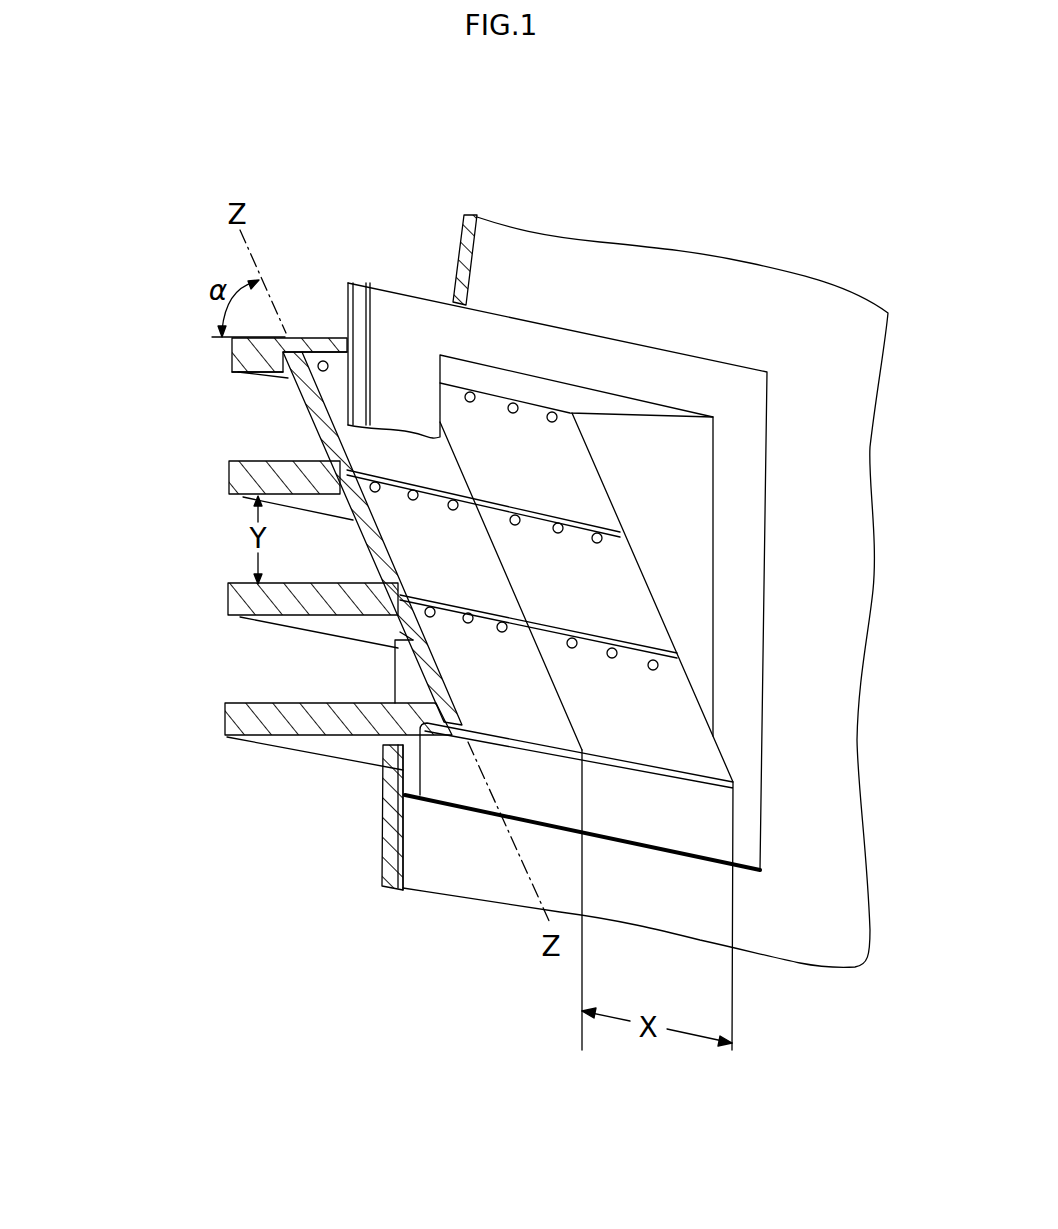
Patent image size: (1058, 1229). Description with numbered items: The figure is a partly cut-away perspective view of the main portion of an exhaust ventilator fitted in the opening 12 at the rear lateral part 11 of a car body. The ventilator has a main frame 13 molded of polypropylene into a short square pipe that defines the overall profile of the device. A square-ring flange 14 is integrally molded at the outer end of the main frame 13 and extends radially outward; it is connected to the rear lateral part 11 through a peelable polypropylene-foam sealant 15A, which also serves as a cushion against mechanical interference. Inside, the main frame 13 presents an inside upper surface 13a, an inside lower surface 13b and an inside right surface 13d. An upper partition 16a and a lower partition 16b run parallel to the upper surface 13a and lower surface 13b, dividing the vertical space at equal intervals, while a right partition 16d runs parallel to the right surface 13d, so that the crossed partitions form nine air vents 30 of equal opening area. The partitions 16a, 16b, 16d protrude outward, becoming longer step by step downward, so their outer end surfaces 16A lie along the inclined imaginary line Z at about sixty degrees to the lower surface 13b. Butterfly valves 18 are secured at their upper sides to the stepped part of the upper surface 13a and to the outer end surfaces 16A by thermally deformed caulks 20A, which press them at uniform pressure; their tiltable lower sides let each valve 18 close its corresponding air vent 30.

The rear lateral part of the car body 11 is at (780, 337).
The opening 12 is at (366, 746).
The main frame 13 is at (285, 712).
The inside upper surface 13a is at (260, 383).
The inside lower surface 13b is at (247, 705).
The inside right surface 13d is at (620, 432).
The flange 14 is at (400, 298).
The sealant 15A is at (348, 320).
The upper partition 16a is at (230, 478).
The lower partition 16b is at (227, 608).
The right partition 16d is at (250, 736).
The outer end surfaces 16A is at (353, 508).
The butterfly valve 18 is at (585, 472).
The caulks 20A is at (552, 412).
The air vents 30 is at (253, 432).